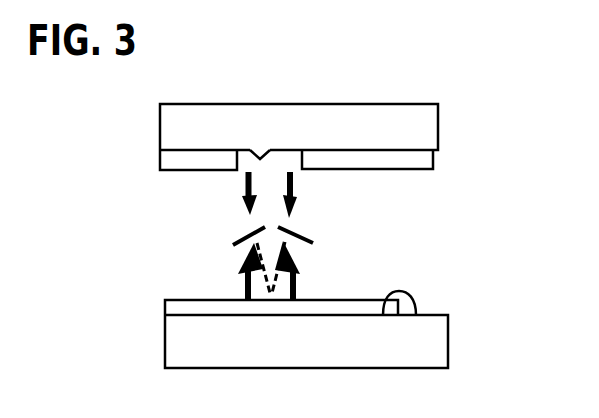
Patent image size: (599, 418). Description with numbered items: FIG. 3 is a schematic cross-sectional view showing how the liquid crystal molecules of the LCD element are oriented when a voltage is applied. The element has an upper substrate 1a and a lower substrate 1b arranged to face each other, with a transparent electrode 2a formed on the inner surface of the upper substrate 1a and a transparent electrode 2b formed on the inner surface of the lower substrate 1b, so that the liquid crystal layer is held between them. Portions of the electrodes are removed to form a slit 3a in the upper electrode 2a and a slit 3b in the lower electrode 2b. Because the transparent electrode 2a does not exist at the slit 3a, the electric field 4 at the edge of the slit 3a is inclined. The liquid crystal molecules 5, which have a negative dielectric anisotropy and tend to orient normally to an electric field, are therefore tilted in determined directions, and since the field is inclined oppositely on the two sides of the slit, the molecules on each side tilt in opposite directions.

The upper substrate 1a is at (438, 126).
The transparent electrode 2a is at (433, 158).
The slit 3a is at (258, 158).
The lower substrate 1b is at (448, 350).
The transparent electrode 2b is at (355, 302).
The slit 3b is at (390, 292).
The inclined electric field 4 is at (241, 181).
The liquid crystal molecules 5 is at (305, 240).